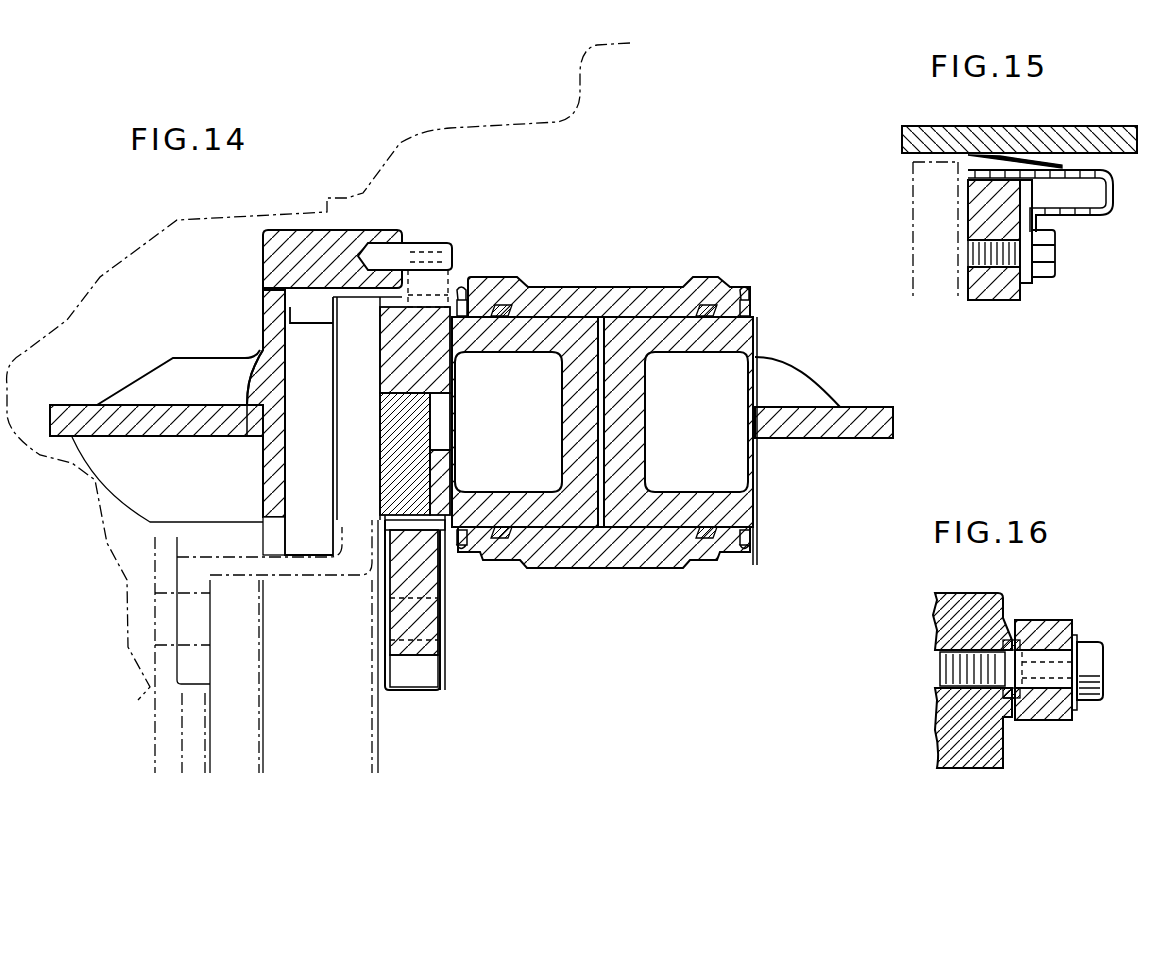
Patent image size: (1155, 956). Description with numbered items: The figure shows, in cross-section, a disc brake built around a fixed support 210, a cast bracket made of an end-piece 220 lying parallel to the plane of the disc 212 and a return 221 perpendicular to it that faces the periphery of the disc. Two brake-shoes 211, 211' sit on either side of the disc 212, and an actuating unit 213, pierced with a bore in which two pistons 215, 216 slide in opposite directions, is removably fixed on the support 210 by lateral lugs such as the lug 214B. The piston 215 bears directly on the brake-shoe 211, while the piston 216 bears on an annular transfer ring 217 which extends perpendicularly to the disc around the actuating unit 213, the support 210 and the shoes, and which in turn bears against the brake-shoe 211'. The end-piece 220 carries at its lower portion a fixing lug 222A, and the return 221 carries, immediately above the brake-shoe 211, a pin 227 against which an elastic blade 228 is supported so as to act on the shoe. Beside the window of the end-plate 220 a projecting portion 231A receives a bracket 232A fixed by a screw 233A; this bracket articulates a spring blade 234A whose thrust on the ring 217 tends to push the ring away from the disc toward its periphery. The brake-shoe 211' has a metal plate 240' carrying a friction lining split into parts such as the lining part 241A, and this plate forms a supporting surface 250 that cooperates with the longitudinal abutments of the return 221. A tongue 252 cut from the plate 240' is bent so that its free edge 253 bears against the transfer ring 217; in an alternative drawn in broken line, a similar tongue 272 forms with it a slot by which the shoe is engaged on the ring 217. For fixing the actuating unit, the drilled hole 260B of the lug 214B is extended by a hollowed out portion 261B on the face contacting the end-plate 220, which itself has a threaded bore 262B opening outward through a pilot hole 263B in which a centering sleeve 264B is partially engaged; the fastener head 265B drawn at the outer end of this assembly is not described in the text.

In FIG. 14, the fixed support 210 is at (432, 692).
In FIG. 15, the fixed support 210 is at (1030, 292).
In FIG. 16, the fixed support 210 is at (933, 730).
In FIG. 14, the brake-shoe 211 is at (457, 418).
In FIG. 14, the brake-shoe 211' is at (217, 309).
In FIG. 14, the disc 212 is at (343, 290).
In FIG. 14, the actuating unit 213 is at (586, 276).
In FIG. 16, the lug 214B is at (1060, 712).
In FIG. 14, the piston 215 is at (550, 318).
In FIG. 14, the piston 216 is at (662, 330).
In FIG. 14, the transfer ring 217 is at (862, 404).
In FIG. 15, the transfer ring 217 is at (917, 124).
In FIG. 14, the end-piece 220 is at (436, 572).
In FIG. 15, the end-piece 220 is at (1000, 292).
In FIG. 14, the return 221 is at (290, 245).
In FIG. 14, the fixing lug 222A is at (430, 668).
In FIG. 14, the pin 227 is at (437, 243).
In FIG. 14, the elastic blade 228 is at (457, 284).
In FIG. 15, the projecting portion 231A is at (977, 212).
In FIG. 15, the bracket 232A is at (1108, 214).
In FIG. 15, the screw 233A is at (1050, 256).
In FIG. 15, the spring blade 234A is at (1048, 166).
In FIG. 14, the metal plate 240' is at (223, 347).
In FIG. 14, the friction lining part 241A is at (293, 422).
In FIG. 14, the supporting surface 250 is at (298, 302).
In FIG. 14, the tongue 252 is at (253, 378).
In FIG. 14, the free edge 253 is at (248, 414).
In FIG. 16, the drilled hole 260B is at (1052, 662).
In FIG. 16, the hollowed out portion 261B is at (1012, 702).
In FIG. 16, the threaded bore 262B is at (960, 658).
In FIG. 16, the pilot hole 263B is at (1015, 700).
In FIG. 16, the centering sleeve 264B is at (1005, 628).
In FIG. 16, the bolt head 265B is at (1100, 690).
In FIG. 14, the tongue 272 is at (248, 452).